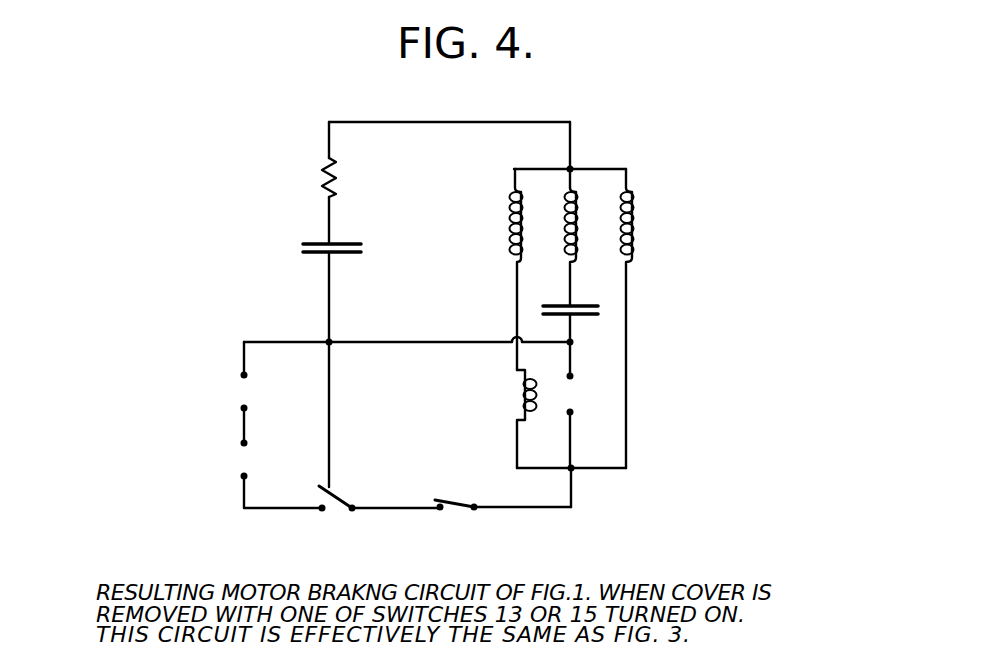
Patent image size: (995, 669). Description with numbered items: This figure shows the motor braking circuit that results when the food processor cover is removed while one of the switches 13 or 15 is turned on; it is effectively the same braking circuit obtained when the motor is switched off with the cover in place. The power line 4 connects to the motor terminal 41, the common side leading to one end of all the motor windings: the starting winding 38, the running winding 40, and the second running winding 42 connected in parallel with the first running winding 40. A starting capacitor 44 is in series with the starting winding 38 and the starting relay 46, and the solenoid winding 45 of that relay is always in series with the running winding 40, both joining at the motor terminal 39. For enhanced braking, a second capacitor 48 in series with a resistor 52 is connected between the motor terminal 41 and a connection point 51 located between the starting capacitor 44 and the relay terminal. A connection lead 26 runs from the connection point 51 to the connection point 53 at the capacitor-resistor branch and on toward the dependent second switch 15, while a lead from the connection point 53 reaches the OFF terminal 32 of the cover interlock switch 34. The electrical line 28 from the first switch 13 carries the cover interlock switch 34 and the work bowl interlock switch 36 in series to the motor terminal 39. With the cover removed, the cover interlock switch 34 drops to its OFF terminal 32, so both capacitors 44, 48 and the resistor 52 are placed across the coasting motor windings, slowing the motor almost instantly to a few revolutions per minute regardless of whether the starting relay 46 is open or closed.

The power line 4 is at (467, 122).
The resistor 52 is at (322, 172).
The second capacitor 48 is at (303, 247).
The motor terminal 41 is at (573, 167).
The running winding 40 is at (510, 222).
The starting winding 38 is at (578, 221).
The second running winding 42 is at (636, 223).
The starting capacitor 44 is at (600, 308).
The connection lead 26 is at (412, 342).
The connection point 53 is at (328, 340).
The connection point 51 is at (574, 342).
The starting relay 46 is at (604, 391).
The solenoid winding 45 is at (528, 393).
The motor terminal 39 is at (573, 470).
The electrical line 28 is at (528, 507).
The second switch 15 is at (237, 388).
The first switch 13 is at (237, 457).
The cover interlock switch 34 is at (337, 514).
The OFF terminal 32 is at (340, 490).
The work bowl interlock switch 36 is at (457, 514).